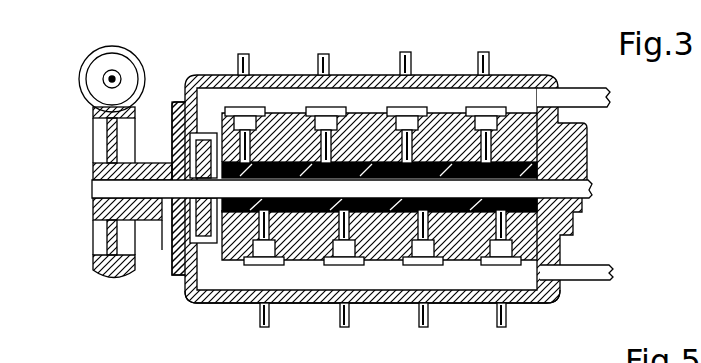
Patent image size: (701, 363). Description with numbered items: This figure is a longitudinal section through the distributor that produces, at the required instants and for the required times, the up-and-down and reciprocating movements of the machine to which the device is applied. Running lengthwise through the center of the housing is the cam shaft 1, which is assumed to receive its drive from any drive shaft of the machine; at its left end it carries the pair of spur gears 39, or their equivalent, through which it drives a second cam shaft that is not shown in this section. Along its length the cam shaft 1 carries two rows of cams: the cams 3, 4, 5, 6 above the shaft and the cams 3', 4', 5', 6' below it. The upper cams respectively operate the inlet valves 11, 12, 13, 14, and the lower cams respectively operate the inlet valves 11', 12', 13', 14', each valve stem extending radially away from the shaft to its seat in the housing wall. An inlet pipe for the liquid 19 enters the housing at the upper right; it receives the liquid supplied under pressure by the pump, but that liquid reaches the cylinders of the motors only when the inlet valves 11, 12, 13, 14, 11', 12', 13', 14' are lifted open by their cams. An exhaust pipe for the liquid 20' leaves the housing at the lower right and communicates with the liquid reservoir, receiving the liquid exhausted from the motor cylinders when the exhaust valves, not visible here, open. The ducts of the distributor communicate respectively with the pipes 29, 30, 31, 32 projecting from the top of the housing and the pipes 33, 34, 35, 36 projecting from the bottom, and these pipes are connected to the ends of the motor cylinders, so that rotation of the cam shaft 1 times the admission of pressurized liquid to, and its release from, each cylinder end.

The cam shaft 1 is at (103, 190).
The cam 3 is at (379, 169).
The cam 3' is at (372, 314).
The cam 4 is at (281, 102).
The cam 4' is at (281, 274).
The cam 5 is at (405, 89).
The cam 5' is at (405, 274).
The cam 6 is at (503, 99).
The cam 6' is at (497, 273).
The inlet valve 11 is at (237, 101).
The inlet valve 11' is at (253, 277).
The inlet valve 12 is at (334, 100).
The inlet valve 12' is at (337, 277).
The inlet valve 13 is at (400, 100).
The inlet valve 13' is at (418, 277).
The inlet valve 14 is at (480, 103).
The inlet valve 14' is at (529, 286).
The inlet pipe for the liquid 19 is at (525, 88).
The exhaust pipe for the liquid 20' is at (576, 297).
The pipe 29 is at (245, 56).
The pipe 30 is at (324, 56).
The pipe 31 is at (405, 53).
The pipe 32 is at (484, 53).
The pipe 33 is at (263, 327).
The pipe 34 is at (341, 327).
The pipe 35 is at (423, 326).
The pipe 36 is at (503, 326).
The pair of spur gears 39 is at (172, 253).